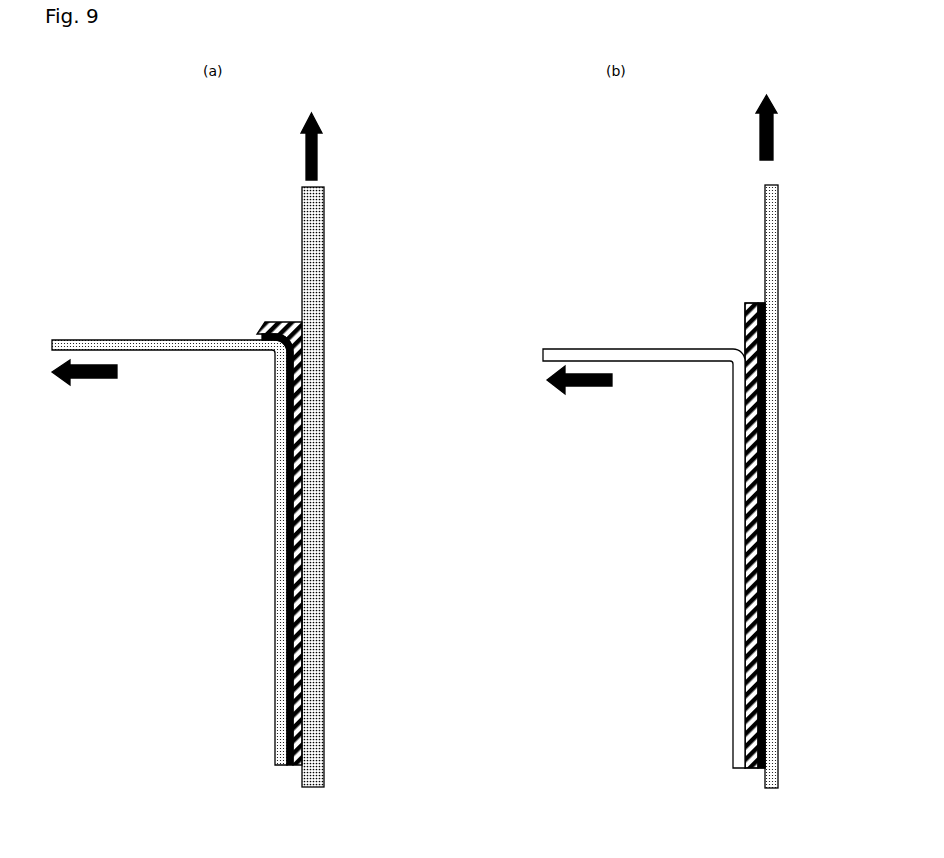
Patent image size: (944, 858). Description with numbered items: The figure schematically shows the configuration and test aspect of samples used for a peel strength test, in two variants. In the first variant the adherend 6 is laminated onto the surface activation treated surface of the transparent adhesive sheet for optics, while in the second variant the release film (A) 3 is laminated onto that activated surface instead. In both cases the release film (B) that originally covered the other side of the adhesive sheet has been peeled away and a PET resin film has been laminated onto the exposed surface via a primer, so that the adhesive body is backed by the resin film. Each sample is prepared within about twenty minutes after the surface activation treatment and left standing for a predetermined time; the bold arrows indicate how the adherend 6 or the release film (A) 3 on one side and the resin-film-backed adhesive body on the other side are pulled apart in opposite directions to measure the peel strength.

The release film (A) 3 is at (720, 358).
The adherend 6 is at (325, 337).